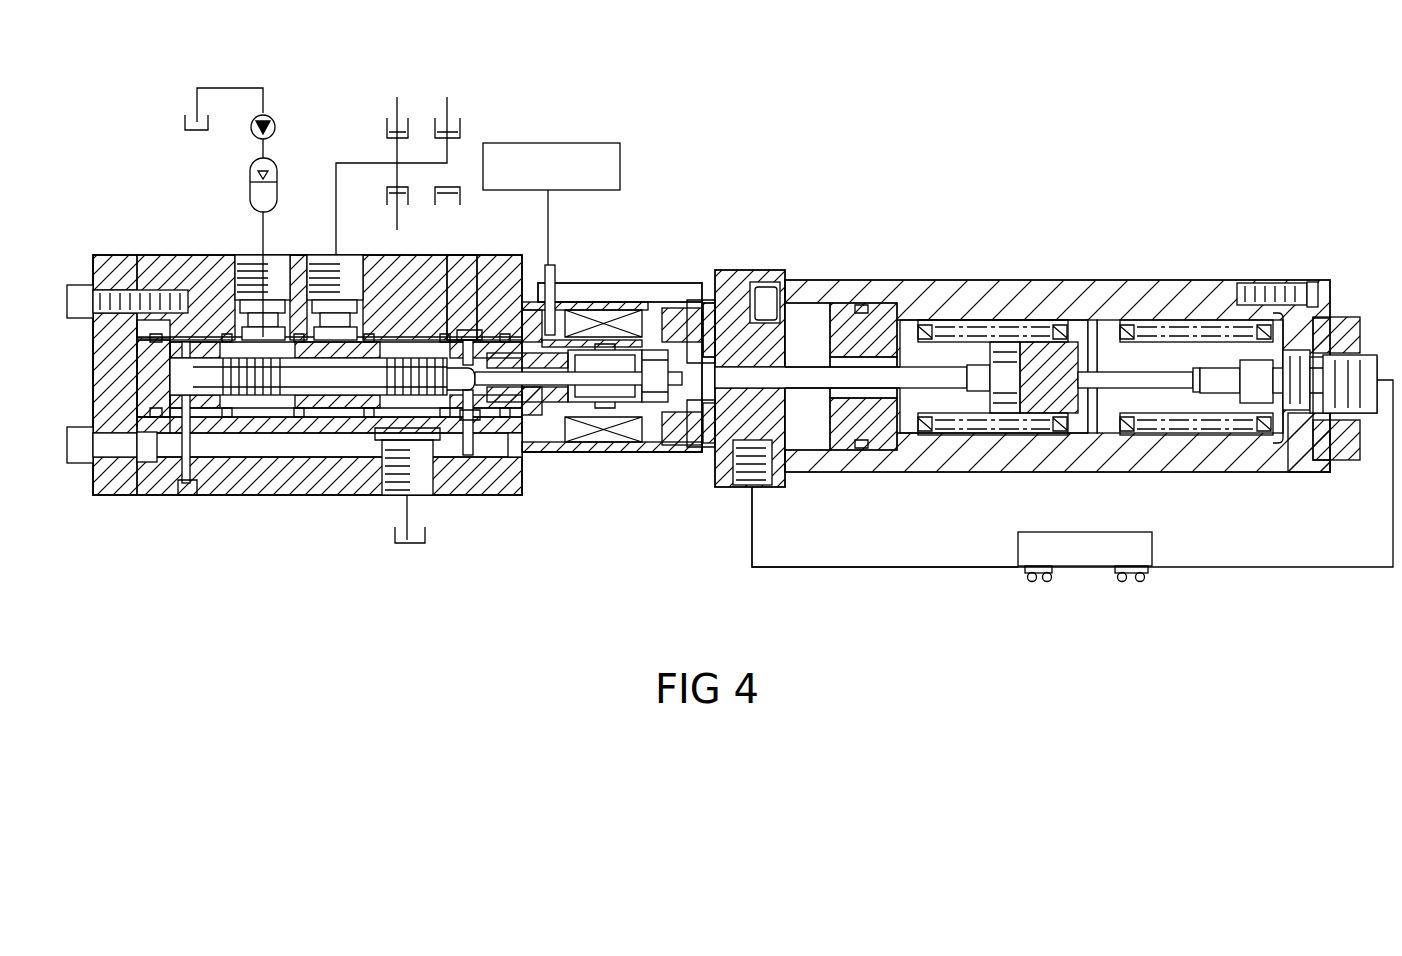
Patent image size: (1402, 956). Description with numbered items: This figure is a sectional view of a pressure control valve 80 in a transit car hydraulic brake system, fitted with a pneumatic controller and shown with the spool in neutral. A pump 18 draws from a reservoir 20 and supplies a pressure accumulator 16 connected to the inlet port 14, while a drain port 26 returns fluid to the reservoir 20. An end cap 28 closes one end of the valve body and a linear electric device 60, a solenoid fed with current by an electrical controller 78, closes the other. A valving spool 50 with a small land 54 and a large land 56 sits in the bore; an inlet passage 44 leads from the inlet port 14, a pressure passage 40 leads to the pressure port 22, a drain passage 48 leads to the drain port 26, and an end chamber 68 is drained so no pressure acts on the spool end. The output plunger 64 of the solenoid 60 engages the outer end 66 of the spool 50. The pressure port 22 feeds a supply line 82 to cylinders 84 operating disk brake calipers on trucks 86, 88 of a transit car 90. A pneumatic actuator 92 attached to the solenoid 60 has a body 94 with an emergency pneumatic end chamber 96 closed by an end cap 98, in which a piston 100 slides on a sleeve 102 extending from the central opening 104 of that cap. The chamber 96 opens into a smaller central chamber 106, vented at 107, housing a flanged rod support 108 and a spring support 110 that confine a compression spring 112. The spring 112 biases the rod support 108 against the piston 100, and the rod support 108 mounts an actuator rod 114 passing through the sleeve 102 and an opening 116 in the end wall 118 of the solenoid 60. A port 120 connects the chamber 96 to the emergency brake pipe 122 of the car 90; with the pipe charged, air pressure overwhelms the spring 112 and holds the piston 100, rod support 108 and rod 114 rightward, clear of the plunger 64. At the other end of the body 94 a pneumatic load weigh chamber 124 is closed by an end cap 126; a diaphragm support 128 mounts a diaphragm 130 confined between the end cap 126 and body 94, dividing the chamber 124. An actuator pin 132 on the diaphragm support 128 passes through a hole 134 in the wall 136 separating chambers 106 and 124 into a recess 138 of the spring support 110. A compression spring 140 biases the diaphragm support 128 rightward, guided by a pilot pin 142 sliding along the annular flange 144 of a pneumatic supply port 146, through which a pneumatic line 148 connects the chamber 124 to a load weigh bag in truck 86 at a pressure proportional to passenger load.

The inlet port 14 is at (245, 255).
The pressure accumulator 16 is at (250, 172).
The pump 18 is at (272, 116).
The reservoir 20 is at (185, 122).
The pressure port 22 is at (322, 257).
The drain port 26 is at (428, 492).
The end cap 28 is at (105, 368).
The pressure passage 40 is at (353, 290).
The inlet passage 44 is at (272, 300).
The drain passage 48 is at (397, 490).
The valving spool 50 is at (323, 380).
The small land 54 is at (225, 455).
The large land 56 is at (440, 330).
The linear electric device 60 is at (590, 278).
The output plunger 64 is at (644, 378).
The outer end 66 is at (546, 280).
The end chamber 68 is at (680, 408).
The electrical controller 78 is at (583, 143).
The pressure control valve 80 is at (730, 188).
The supply line 82 is at (348, 163).
The cylinders 84 is at (432, 118).
The truck 86 is at (1130, 581).
The truck 88 is at (1037, 581).
The transit car 90 is at (1088, 575).
The pneumatic actuator 92 is at (1075, 275).
The actuator body 94 is at (932, 282).
The emergency pneumatic end chamber 96 is at (800, 322).
The end cap 98 is at (735, 268).
The piston 100 is at (882, 317).
The sleeve 102 is at (810, 362).
The central opening 104 is at (712, 440).
The central chamber 106 is at (1045, 320).
The vent 107 is at (1020, 320).
The flanged rod support 108 is at (920, 433).
The spring support 110 is at (1090, 435).
The compression spring 112 is at (1040, 435).
The actuator rod 114 is at (818, 395).
The opening 116 is at (688, 360).
The end wall 118 is at (675, 420).
The port 120 is at (742, 487).
The pneumatic emergency brake pipe 122 is at (845, 569).
The pneumatic load weigh chamber 124 is at (1172, 377).
The end cap 126 is at (1340, 320).
The diaphragm support 128 is at (1262, 345).
The diaphragm 130 is at (1248, 452).
The actuator pin 132 is at (1187, 345).
The hole 134 is at (1140, 330).
The wall 136 is at (1110, 420).
The recess 138 is at (1110, 335).
The compression spring 140 is at (1165, 425).
The pilot pin 142 is at (1284, 283).
The annular flange 144 is at (1365, 420).
The pneumatic supply port 146 is at (1363, 355).
The pneumatic line 148 is at (1312, 570).